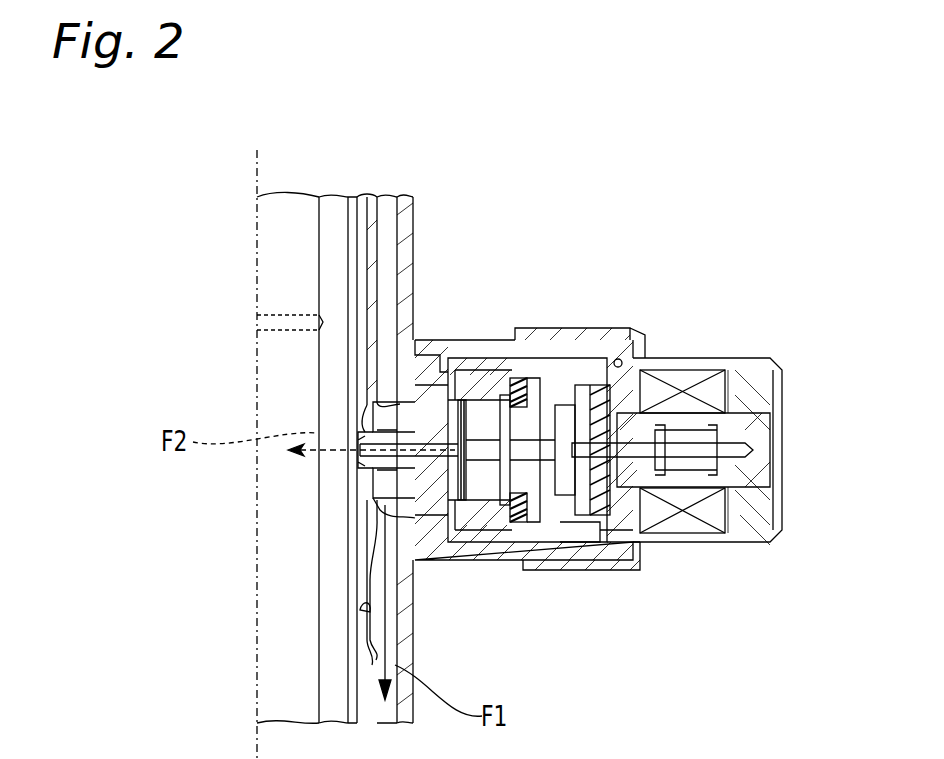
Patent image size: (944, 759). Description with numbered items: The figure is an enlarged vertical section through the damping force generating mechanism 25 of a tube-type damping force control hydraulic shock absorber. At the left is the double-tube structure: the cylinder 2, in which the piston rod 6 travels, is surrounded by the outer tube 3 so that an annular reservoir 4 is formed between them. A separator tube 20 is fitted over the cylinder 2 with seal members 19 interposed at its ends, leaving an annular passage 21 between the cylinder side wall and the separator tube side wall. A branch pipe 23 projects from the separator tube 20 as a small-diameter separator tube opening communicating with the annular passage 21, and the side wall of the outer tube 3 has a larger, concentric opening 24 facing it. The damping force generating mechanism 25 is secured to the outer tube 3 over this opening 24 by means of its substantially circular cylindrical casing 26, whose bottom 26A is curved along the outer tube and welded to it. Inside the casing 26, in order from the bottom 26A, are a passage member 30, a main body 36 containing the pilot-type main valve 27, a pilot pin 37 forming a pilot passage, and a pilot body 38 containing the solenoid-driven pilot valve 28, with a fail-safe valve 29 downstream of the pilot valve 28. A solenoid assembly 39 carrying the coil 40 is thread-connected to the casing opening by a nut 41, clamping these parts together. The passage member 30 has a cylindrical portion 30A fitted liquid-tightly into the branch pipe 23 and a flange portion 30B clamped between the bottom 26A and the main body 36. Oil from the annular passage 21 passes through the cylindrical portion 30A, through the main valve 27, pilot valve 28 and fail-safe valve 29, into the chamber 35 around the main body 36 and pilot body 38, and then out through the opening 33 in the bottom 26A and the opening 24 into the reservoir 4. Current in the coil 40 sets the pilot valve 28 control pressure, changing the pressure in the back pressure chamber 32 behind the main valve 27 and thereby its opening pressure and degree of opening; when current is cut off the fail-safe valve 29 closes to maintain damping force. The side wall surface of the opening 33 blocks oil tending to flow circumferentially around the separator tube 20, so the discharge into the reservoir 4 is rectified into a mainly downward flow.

The cylinder 2 is at (352, 197).
The outer tube 3 is at (405, 197).
The reservoir 4 is at (385, 197).
The piston rod 6 is at (275, 232).
The seal members 19 is at (400, 620).
The separator tube 20 is at (372, 198).
The annular passage 21 is at (357, 197).
The branch pipe 23 is at (372, 430).
The opening 24 is at (382, 402).
The damping force generating mechanism 25 is at (686, 285).
The casing 26 is at (477, 345).
The bottom 26A is at (395, 392).
The main valve 27 is at (510, 525).
The pilot valve 28 is at (590, 545).
The fail-safe valve 29 is at (620, 550).
The passage member 30 is at (366, 490).
The cylindrical portion 30A is at (355, 458).
The flange portion 30B is at (440, 345).
The back pressure chamber 32 is at (555, 345).
The opening 33 is at (385, 512).
The chamber 35 is at (510, 345).
The main body 36 is at (475, 555).
The pilot pin 37 is at (530, 530).
The pilot body 38 is at (560, 550).
The solenoid assembly 39 is at (660, 355).
The coil 40 is at (695, 362).
The nut 41 is at (615, 345).